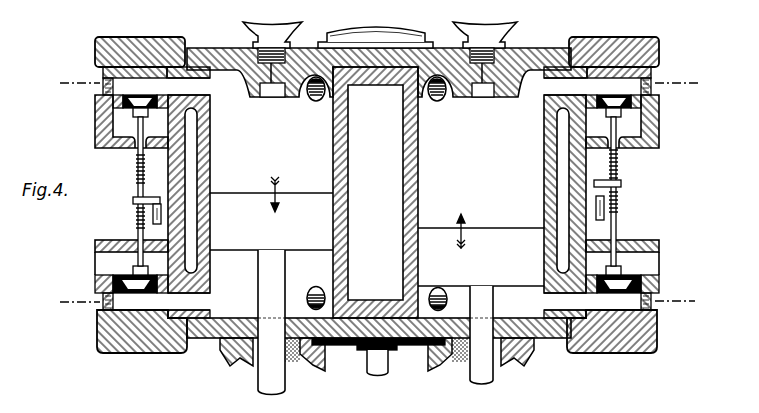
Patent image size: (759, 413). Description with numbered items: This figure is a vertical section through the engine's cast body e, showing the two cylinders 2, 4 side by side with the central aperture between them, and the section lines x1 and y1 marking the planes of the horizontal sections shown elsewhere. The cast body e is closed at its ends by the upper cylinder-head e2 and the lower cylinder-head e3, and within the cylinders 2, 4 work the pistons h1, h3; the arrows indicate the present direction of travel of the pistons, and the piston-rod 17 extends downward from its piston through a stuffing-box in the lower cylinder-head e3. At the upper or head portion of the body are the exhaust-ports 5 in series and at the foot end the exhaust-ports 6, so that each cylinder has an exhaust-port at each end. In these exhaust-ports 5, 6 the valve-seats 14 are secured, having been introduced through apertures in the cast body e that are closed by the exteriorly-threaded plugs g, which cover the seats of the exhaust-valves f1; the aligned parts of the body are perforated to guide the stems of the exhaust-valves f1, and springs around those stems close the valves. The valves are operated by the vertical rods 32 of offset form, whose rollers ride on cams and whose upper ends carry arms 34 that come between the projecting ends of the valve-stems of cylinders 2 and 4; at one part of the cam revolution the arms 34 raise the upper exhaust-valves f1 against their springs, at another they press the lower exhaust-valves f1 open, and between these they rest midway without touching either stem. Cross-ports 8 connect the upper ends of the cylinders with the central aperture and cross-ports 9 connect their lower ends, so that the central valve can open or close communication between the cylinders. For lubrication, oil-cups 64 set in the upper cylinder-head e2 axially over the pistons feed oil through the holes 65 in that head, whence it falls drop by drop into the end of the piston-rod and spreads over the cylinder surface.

The plug g is at (141, 37).
The upper cylinder-head e2 is at (240, 48).
The lower cylinder-head e3 is at (553, 340).
The oil-cup 64 is at (284, 26).
The hole in cylinder-head 65 is at (271, 97).
The cross-port 8 is at (316, 101).
The cross-port 9 is at (316, 287).
The exhaust-port 5 is at (198, 87).
The exhaust-port 6 is at (197, 300).
The exhaust-valve f1 is at (688, 96).
The valve-seat 14 is at (113, 112).
The cast body e is at (137, 166).
The arm 34 is at (133, 201).
The vertical rod 32 is at (153, 216).
The cylinder 2 is at (271, 172).
The cylinder 4 is at (481, 192).
The piston h1 is at (271, 213).
The piston h3 is at (481, 250).
The piston-rod 17 is at (375, 322).
The section line x1 is at (377, 82).
The section line y1 is at (374, 301).